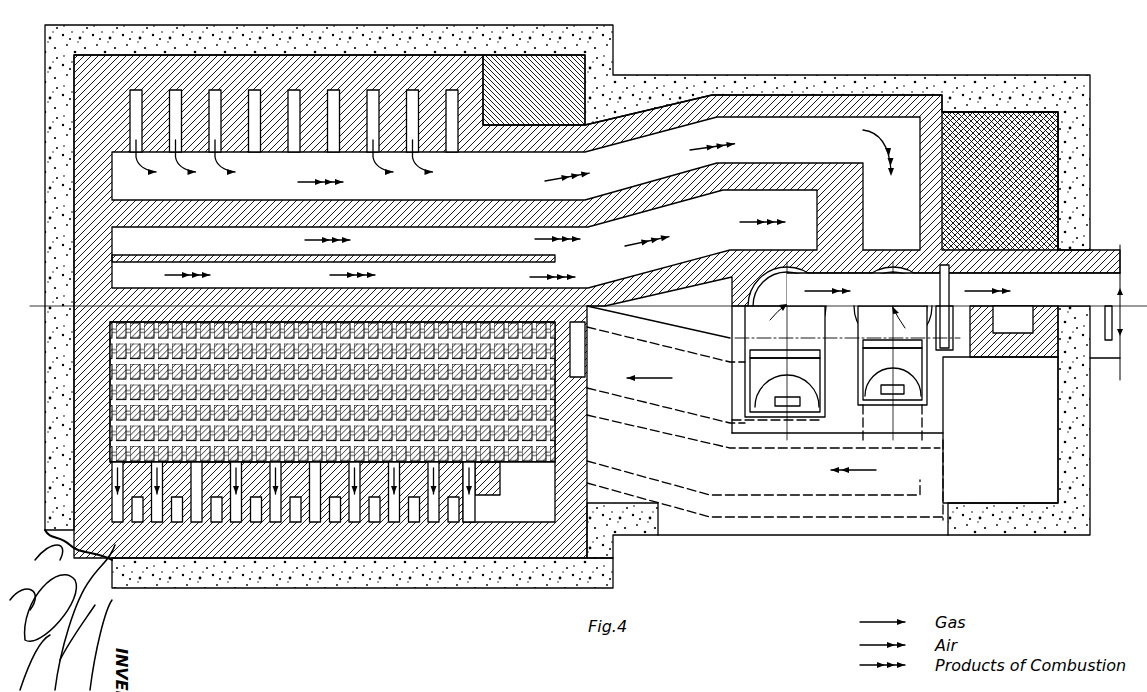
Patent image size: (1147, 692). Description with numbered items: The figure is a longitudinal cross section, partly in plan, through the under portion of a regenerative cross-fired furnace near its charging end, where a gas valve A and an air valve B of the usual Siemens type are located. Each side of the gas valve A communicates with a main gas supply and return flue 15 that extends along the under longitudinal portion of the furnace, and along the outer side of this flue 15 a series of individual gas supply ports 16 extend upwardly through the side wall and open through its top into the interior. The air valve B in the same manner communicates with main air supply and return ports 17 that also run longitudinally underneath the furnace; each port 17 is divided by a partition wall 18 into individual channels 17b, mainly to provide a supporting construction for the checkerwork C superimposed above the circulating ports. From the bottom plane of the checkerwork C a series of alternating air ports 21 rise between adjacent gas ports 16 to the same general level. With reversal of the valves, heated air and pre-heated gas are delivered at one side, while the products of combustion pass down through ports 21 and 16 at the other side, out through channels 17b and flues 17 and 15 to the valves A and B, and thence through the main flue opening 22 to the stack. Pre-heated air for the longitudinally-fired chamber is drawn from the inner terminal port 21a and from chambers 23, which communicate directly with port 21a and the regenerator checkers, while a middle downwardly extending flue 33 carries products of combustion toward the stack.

The supply and return flue 15 is at (516, 299).
The gas supply port 16 is at (295, 138).
The main air supply and return port 17 is at (464, 290).
The individual channel 17b is at (372, 258).
The partition wall 18 is at (270, 257).
The alternating port 21 is at (277, 522).
The inner terminal port 21a is at (470, 495).
The main flue opening 22 is at (950, 289).
The chamber 23 is at (545, 485).
The middle downwardly extending flue 33 is at (1014, 331).
The gas valve A is at (893, 351).
The air valve B is at (785, 351).
The checkerwork C is at (587, 432).